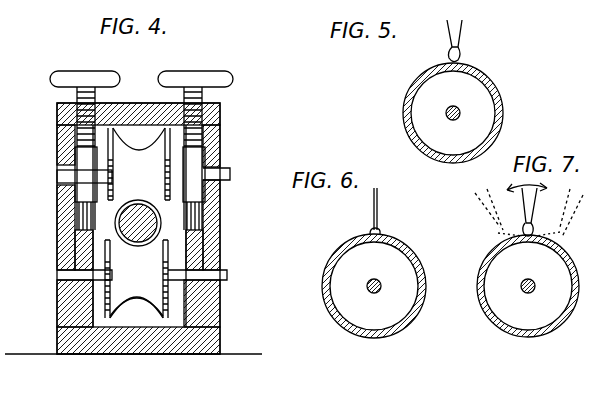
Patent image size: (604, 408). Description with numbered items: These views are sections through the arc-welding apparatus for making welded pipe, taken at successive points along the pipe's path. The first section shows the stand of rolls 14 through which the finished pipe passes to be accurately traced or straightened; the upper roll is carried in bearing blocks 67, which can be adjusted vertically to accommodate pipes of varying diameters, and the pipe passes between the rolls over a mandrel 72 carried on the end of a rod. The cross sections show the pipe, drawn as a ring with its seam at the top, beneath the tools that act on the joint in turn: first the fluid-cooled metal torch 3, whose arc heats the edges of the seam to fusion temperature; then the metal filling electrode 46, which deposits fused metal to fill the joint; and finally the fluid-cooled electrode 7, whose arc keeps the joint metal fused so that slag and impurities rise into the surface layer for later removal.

In FIG. 4, the rolls 14 is at (120, 158).
In FIG. 4, the bearing blocks 67 is at (84, 182).
In FIG. 4, the mandrel 72 is at (152, 227).
In FIG. 5, the fluid-cooled metal torch 3 is at (467, 32).
In FIG. 6, the needle tool 46 is at (372, 212).
In FIG. 7, the fluid-cooled electrode 7 is at (536, 206).